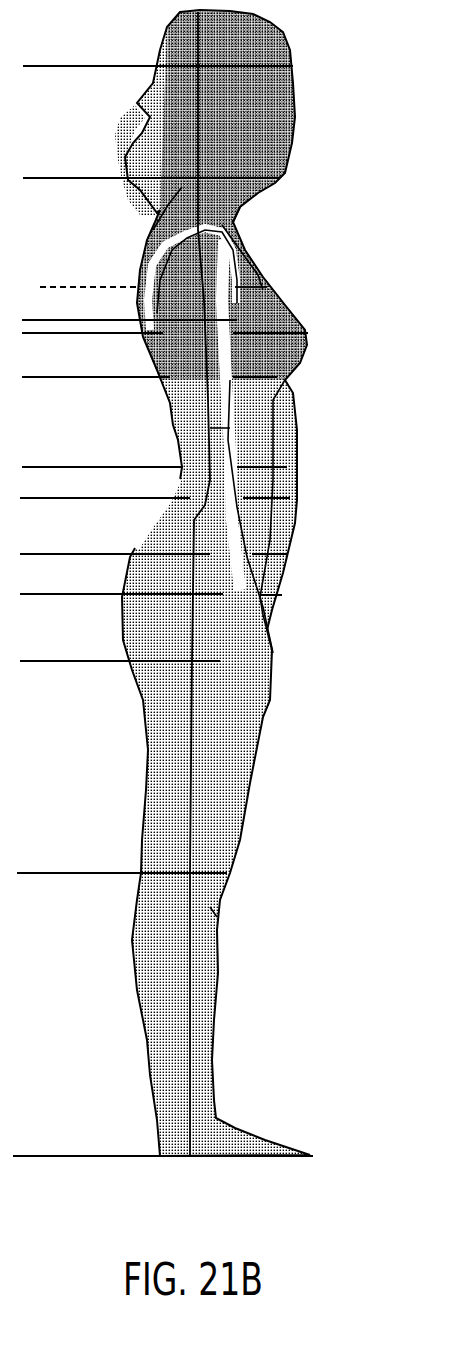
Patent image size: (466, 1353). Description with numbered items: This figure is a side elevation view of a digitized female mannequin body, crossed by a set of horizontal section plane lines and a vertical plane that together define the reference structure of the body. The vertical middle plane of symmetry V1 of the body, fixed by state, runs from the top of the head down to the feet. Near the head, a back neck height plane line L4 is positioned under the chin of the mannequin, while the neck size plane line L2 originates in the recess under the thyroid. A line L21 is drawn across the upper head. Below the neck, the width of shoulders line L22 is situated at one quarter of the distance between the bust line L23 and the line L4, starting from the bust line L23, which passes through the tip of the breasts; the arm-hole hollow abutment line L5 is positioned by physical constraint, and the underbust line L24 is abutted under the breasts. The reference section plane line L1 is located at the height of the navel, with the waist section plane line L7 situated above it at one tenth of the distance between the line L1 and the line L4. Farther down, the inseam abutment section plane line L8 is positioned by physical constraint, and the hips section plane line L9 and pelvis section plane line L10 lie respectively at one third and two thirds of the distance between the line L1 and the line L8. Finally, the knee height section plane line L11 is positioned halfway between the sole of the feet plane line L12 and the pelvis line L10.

The vertical middle plane V1 is at (143, 250).
The head top horizontal line L21 is at (63, 68).
The back neck height plane line L4 is at (103, 180).
The neck size plane line L2 is at (240, 206).
The width of shoulders line L22 is at (63, 287).
The arm-hole hollow abutment line L5 is at (50, 303).
The bust line L23 is at (42, 335).
The underbust line L24 is at (78, 379).
The waist section plane line L7 is at (98, 467).
The reference section plane line L1 is at (42, 499).
The hips section plane line L9 is at (80, 553).
The pelvis section plane line L10 is at (98, 596).
The inseam abutment section plane line L8 is at (85, 662).
The knee height section plane line L11 is at (92, 875).
The sole of the feet plane line L12 is at (90, 1158).